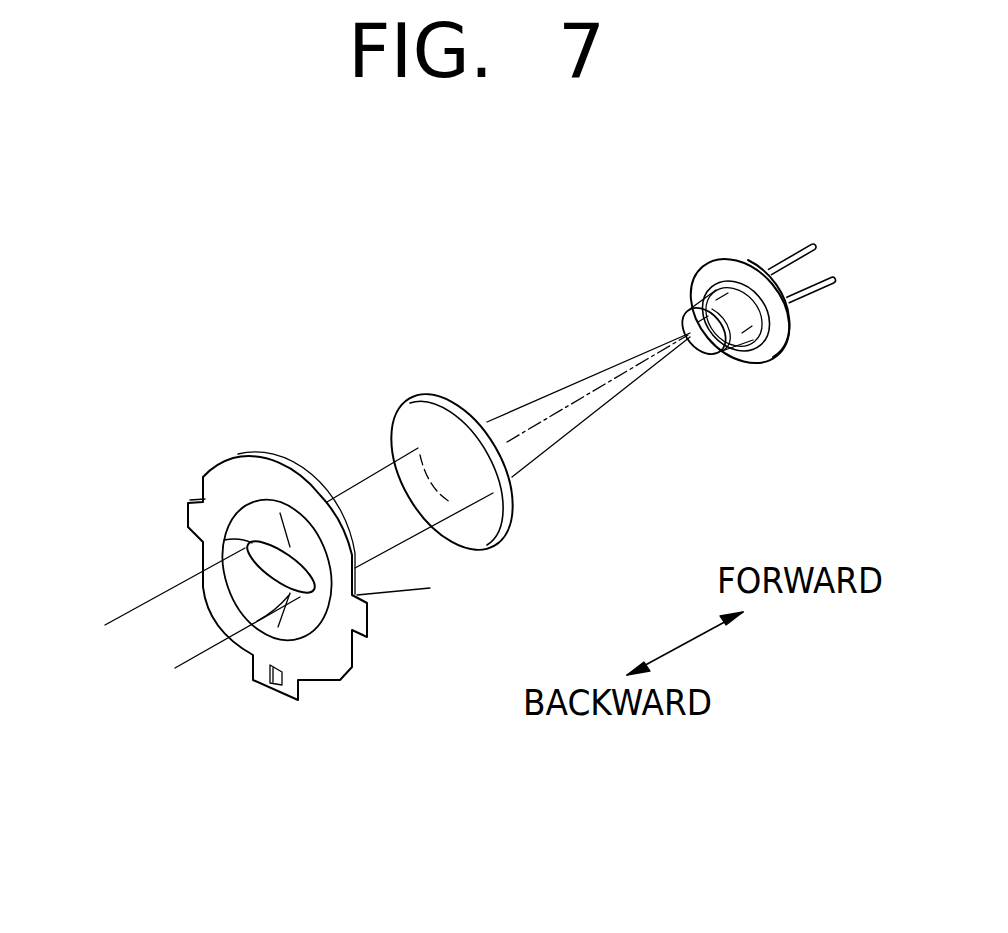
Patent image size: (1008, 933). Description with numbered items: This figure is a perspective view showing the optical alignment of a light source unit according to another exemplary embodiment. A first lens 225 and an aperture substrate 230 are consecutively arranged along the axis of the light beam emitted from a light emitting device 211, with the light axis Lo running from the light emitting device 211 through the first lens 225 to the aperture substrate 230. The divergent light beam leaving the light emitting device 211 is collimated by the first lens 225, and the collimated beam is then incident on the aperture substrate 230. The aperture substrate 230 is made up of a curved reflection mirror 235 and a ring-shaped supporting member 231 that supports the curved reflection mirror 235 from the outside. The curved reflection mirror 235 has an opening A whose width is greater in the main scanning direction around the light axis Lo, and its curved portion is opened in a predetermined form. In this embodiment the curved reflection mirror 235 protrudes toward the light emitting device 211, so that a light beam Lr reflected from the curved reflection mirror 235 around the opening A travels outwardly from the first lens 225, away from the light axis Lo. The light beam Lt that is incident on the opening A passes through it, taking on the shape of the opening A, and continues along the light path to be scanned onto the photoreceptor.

The light emitting device 211 is at (773, 353).
The first lens 225 is at (482, 530).
The aperture substrate 230 is at (269, 632).
The ring-shaped supporting member 231 is at (330, 662).
The curved reflection mirror 235 is at (303, 623).
The opening A is at (255, 578).
The light axis Lo is at (538, 425).
The light beam incident on the opening Lt is at (132, 608).
The reflected light beam Lr is at (402, 593).